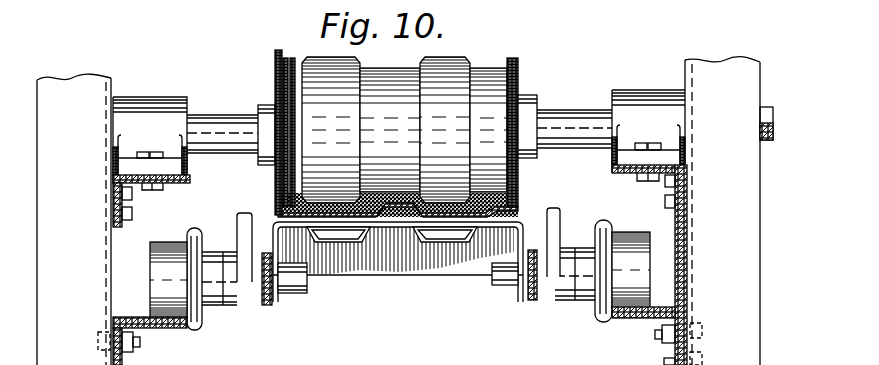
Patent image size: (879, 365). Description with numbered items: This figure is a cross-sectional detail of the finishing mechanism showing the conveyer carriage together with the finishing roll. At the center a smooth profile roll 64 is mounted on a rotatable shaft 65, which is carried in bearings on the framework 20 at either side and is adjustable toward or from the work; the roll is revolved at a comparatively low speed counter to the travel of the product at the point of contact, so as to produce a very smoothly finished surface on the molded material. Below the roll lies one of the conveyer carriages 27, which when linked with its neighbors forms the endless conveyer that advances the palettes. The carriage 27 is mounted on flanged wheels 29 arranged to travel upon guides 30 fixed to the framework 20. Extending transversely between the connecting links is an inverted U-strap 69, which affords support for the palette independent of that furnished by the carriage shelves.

The framework 20 is at (405, 211).
The carriage 27 is at (406, 276).
The flanged wheel 29 is at (168, 242).
The guide 30 is at (157, 328).
The smooth profile roll 64 is at (497, 103).
The rotatable shaft 65 is at (565, 116).
The inverted U-strap 69 is at (390, 220).